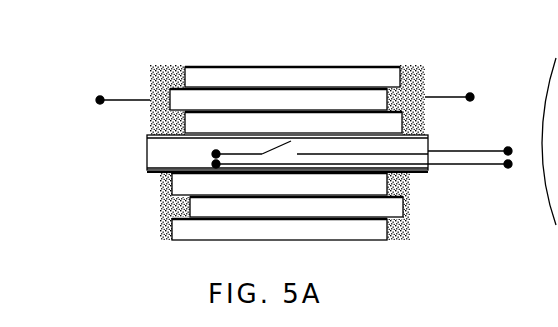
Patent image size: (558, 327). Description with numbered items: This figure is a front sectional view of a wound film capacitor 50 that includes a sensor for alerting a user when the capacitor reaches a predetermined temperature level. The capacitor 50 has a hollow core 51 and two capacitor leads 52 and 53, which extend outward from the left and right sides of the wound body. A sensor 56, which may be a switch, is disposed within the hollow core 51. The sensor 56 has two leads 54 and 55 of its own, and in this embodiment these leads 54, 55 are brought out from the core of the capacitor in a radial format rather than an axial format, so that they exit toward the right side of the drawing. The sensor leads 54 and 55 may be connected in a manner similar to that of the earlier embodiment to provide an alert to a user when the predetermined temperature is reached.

The capacitor 50 is at (181, 48).
The hollow core 51 is at (147, 156).
The lead 52 is at (100, 100).
The lead 53 is at (470, 96).
The lead 54 is at (508, 148).
The lead 55 is at (508, 165).
The sensor 56 is at (262, 148).